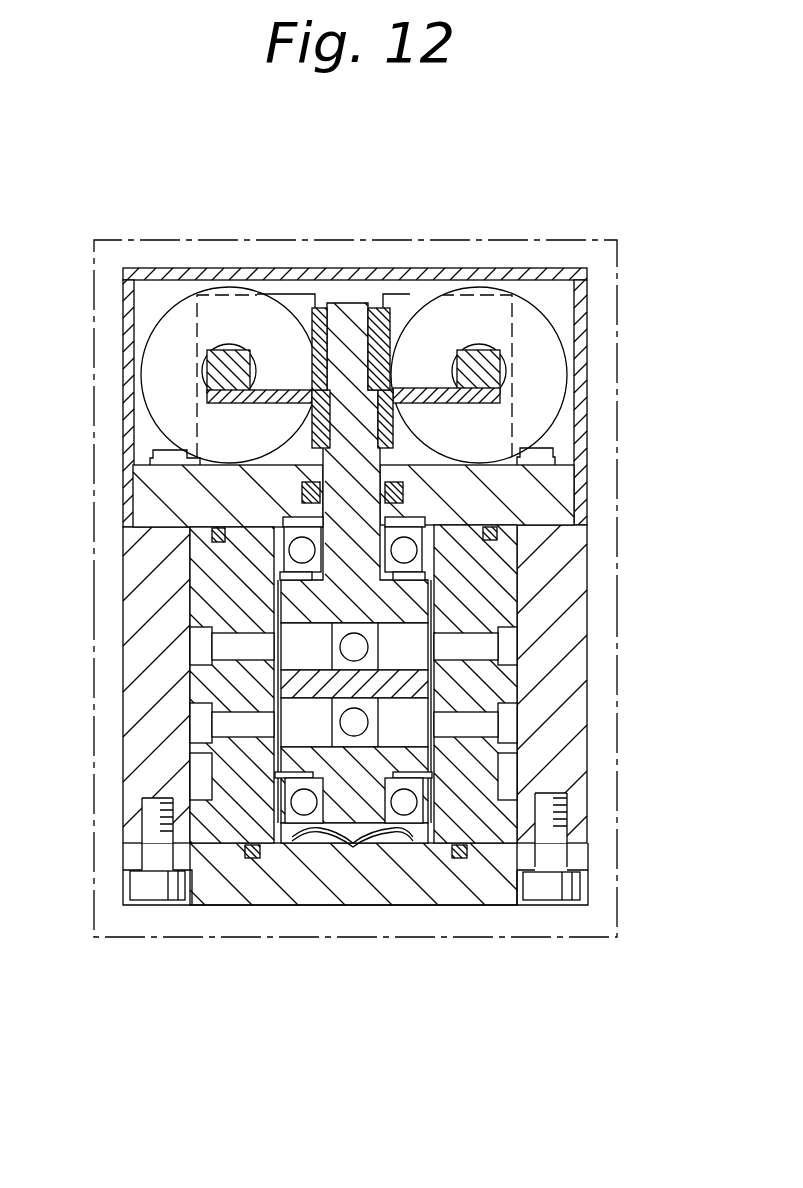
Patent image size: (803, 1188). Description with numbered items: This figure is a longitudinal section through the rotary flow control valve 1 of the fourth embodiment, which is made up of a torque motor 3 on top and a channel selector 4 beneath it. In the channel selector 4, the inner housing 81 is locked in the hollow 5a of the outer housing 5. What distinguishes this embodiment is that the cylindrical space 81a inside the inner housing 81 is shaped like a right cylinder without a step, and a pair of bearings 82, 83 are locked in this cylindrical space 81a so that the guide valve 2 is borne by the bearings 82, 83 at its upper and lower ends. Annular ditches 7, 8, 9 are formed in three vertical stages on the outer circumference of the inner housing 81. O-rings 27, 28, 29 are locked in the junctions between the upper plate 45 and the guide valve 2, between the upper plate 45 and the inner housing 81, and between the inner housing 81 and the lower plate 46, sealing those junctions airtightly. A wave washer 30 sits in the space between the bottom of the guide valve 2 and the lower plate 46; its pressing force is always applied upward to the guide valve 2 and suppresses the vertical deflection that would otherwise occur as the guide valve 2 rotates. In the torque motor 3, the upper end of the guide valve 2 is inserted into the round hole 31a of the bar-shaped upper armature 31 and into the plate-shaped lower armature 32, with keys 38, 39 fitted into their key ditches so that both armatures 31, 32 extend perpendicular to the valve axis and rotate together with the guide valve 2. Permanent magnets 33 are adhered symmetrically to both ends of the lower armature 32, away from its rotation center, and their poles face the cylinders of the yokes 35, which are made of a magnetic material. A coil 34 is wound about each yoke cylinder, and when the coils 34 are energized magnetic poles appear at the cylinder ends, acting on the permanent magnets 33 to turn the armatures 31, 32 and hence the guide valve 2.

The rotary flow control valve 1 is at (432, 380).
The guide valve 2 is at (278, 600).
The torque motor 3 is at (622, 402).
The channel selector 4 is at (620, 862).
The outer housing 5 is at (588, 630).
The hollow 5a is at (575, 590).
The annular ditch 7 is at (190, 645).
The annular ditch 8 is at (190, 715).
The annular ditch 9 is at (190, 783).
The O-ring 27 is at (405, 492).
The O-ring 28 is at (498, 522).
The O-ring 29 is at (458, 858).
The wave washer 30 is at (343, 845).
The upper armature 31 is at (397, 313).
The round hole 31a is at (337, 307).
The lower armature 32 is at (500, 348).
The permanent magnet 33 is at (203, 348).
The coil 34 is at (230, 287).
The yoke 35 is at (293, 303).
The key 38 is at (370, 307).
The key 39 is at (312, 420).
The upper plate 45 is at (133, 480).
The lower plate 46 is at (492, 908).
The inner housing 81 is at (520, 678).
The cylindrical space 81a is at (432, 735).
The bearing 82 is at (277, 548).
The bearing 83 is at (275, 805).